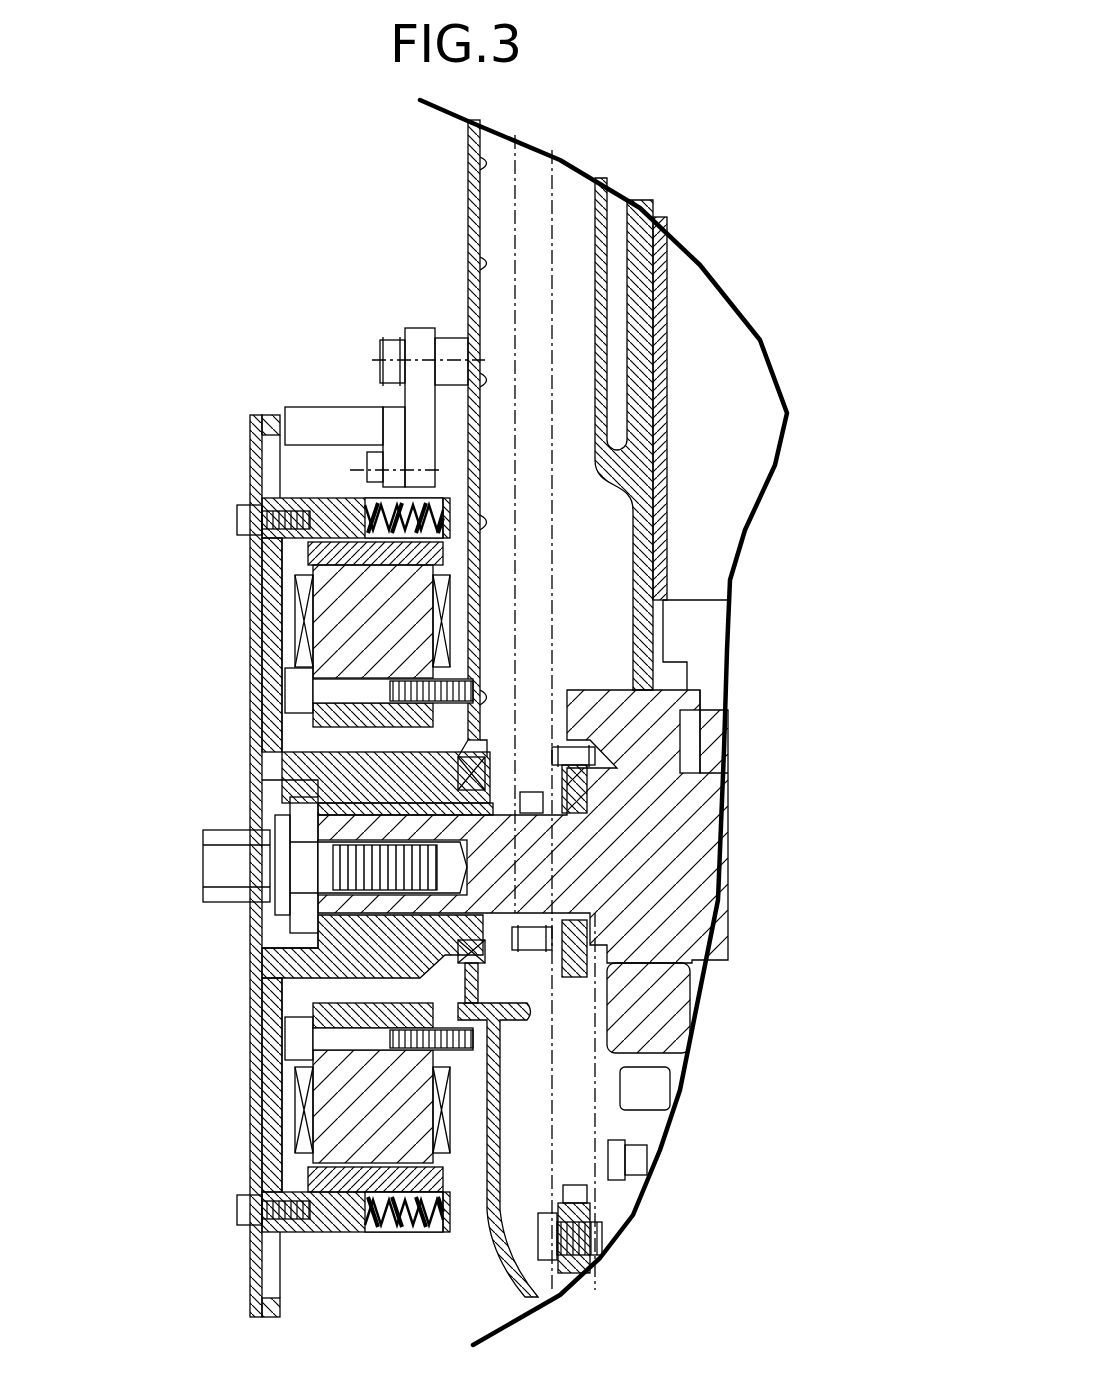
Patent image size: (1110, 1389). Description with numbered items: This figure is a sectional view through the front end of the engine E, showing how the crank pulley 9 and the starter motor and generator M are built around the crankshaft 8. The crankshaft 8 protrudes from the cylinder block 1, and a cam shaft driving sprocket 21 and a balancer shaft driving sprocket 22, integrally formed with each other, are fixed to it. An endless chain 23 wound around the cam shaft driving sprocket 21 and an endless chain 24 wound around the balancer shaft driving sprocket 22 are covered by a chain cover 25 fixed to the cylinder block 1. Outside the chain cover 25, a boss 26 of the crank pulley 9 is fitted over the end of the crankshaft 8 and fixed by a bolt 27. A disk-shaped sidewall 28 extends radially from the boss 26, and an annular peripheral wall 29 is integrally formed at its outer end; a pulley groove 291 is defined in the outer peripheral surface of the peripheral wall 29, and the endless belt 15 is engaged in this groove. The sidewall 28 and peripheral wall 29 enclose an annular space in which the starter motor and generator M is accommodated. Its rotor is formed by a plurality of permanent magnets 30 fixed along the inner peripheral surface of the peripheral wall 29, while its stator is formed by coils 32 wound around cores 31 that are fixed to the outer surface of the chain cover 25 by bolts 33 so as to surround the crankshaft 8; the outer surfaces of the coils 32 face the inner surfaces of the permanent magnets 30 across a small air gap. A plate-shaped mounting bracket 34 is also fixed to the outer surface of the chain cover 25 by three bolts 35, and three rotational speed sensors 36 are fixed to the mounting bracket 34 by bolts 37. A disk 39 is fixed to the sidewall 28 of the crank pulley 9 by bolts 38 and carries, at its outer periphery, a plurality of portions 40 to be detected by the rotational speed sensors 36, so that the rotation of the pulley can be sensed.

The engine E is at (357, 210).
The starter motor and generator M is at (295, 618).
The cylinder block 1 is at (633, 556).
The crankshaft 8 is at (685, 850).
The crank pulley 9 is at (225, 980).
The endless belt 15 is at (420, 1236).
The cam shaft driving sprocket 21 is at (537, 795).
The balancer shaft driving sprocket 22 is at (575, 980).
The endless chain 23 is at (552, 648).
The endless chain 24 is at (550, 1047).
The chain cover 25 is at (468, 212).
The boss 26 is at (415, 782).
The bolt 27 is at (220, 835).
The sidewall 28 is at (268, 703).
The peripheral wall 29 is at (327, 1236).
The pulley groove 291 is at (378, 1234).
The permanent magnets 30 is at (420, 553).
The cores 31 is at (410, 617).
The coils 32 is at (443, 648).
The bolts 33 is at (300, 690).
The mounting bracket 34 is at (420, 447).
The bolts 35 is at (385, 342).
The rotational speed sensors 36 is at (325, 425).
The bolts 37 is at (367, 465).
The bolts 38 is at (242, 518).
The disk 39 is at (252, 1018).
The portions to be detected 40 is at (270, 418).